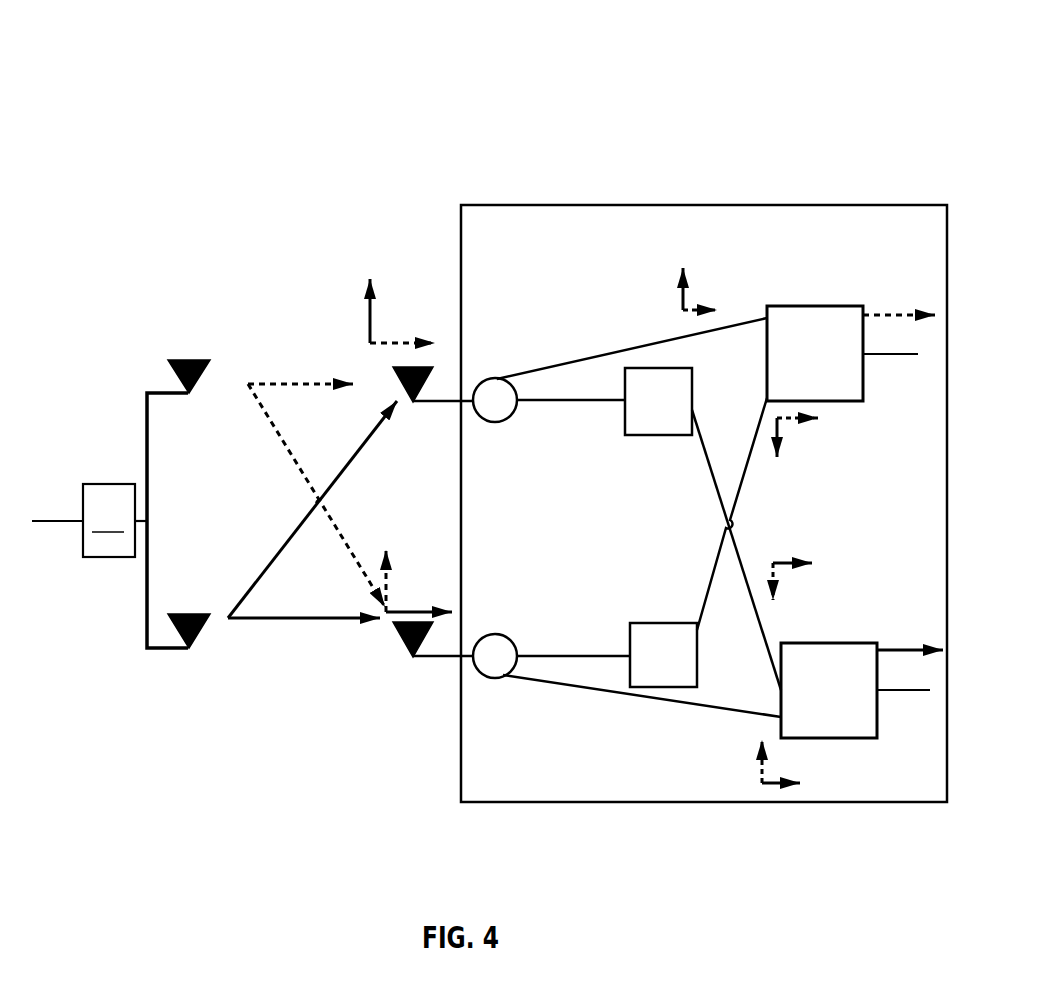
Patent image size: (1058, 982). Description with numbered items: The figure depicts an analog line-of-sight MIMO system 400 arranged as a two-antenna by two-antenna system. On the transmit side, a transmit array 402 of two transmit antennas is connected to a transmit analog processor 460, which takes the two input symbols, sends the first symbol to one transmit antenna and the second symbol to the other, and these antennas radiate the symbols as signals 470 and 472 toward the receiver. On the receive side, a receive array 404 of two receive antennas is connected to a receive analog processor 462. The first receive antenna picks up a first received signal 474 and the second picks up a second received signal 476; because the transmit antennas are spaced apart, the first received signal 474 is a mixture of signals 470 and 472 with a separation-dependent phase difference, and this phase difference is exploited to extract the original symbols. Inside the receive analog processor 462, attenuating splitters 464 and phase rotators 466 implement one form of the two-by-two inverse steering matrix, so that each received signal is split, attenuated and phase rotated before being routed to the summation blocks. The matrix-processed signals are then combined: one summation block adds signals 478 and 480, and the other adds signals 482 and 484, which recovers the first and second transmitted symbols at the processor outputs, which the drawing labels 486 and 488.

The system 400 is at (184, 82).
The transmit array 402 is at (148, 660).
The receive array 404 is at (428, 667).
The transmit analog processor 460 is at (83, 520).
The receive analog processor 462 is at (528, 259).
The attenuating splitters 464 is at (496, 424).
The phase rotators 466 is at (645, 437).
The signal 470 is at (280, 368).
The signal 472 is at (300, 652).
The signal Y1 474 is at (361, 272).
The signal Y2 476 is at (409, 589).
The signal 478 is at (668, 272).
The signal 480 is at (794, 441).
The signal 482 is at (786, 549).
The signal 484 is at (747, 758).
The first output signal X1 486 is at (891, 306).
The second output signal X2 488 is at (902, 641).